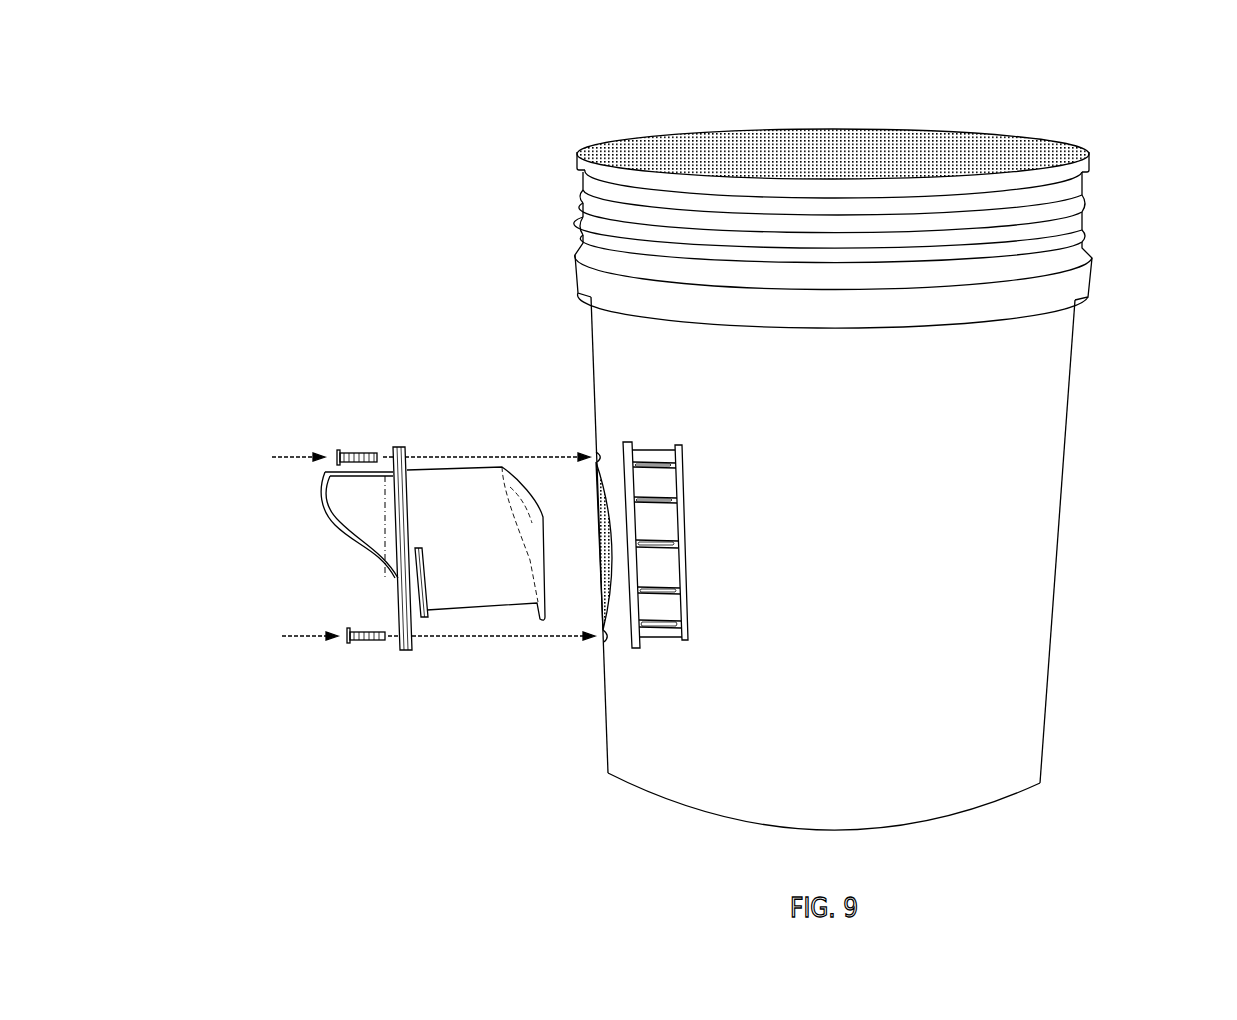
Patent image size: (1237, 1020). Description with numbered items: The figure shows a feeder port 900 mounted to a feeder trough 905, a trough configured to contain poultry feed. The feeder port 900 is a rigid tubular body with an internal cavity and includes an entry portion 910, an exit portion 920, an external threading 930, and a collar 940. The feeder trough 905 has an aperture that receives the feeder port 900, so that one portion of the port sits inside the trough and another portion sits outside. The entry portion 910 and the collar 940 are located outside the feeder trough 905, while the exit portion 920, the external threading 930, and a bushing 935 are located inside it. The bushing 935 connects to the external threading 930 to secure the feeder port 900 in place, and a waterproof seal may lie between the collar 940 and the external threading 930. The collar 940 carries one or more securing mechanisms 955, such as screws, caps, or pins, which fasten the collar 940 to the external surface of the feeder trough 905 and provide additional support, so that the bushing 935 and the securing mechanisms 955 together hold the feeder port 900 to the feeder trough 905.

The feeder port 900 is at (220, 53).
The feeder trough 905 is at (1068, 548).
The entry portion 910 is at (362, 552).
The exit portion 920 is at (544, 519).
The external threading 930 is at (423, 630).
The bushing 935 is at (698, 612).
The collar 940 is at (395, 440).
The securing mechanisms 955 is at (368, 656).